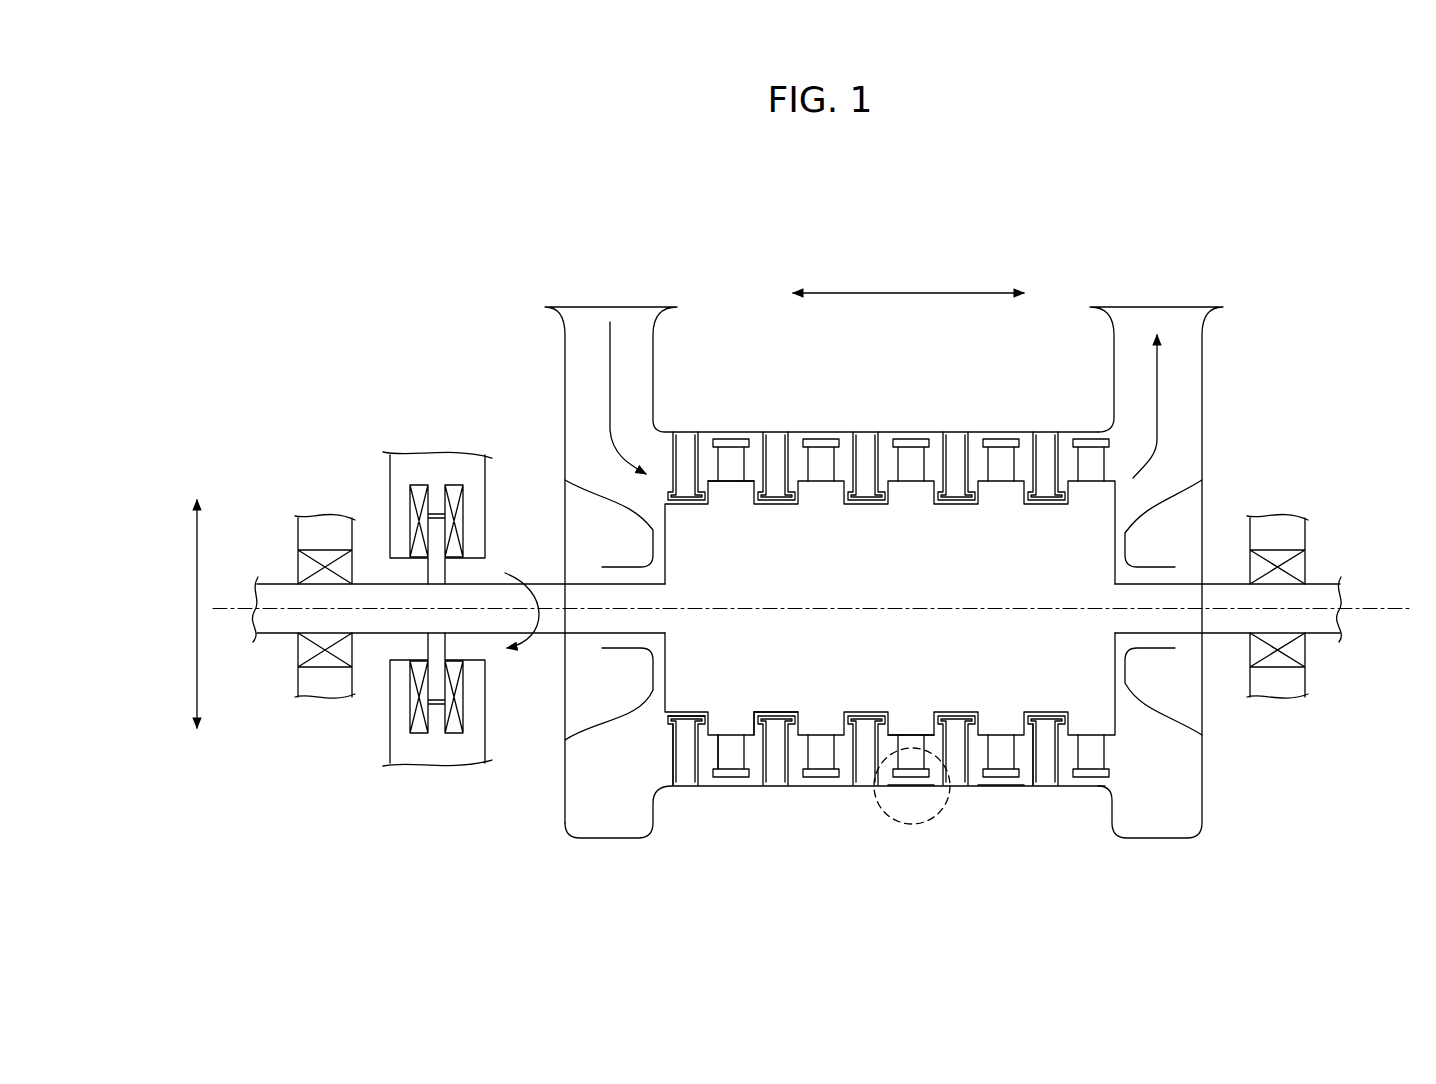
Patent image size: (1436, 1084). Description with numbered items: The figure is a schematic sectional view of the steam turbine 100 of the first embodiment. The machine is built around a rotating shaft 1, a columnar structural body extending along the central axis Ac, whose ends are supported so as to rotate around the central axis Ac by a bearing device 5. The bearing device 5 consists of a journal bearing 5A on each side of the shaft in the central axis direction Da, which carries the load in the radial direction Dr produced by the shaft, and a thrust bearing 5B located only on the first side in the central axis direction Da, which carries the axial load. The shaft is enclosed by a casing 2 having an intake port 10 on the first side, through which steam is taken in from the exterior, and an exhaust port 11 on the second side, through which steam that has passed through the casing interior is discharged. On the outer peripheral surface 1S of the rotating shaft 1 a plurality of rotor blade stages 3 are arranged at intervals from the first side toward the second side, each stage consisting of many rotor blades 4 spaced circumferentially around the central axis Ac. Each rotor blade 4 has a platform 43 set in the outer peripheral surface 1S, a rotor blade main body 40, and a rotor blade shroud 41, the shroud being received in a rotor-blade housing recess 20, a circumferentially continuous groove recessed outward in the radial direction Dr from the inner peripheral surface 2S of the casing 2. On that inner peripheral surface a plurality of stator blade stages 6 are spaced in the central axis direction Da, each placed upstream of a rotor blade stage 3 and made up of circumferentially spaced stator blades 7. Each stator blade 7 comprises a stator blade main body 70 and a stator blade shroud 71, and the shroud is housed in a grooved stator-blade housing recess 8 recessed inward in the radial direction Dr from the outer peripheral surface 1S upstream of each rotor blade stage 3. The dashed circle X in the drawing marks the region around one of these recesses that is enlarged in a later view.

The steam turbine 100 is at (1294, 230).
The rotating shaft 1 is at (693, 661).
The intake port 10 is at (660, 355).
The exhaust port 11 is at (1203, 355).
The stator blade stage 6 is at (866, 568).
The stator blade 7 is at (865, 452).
The rotor blade stage 3 is at (911, 565).
The rotor blade 4 is at (1090, 457).
The bearing device 5 is at (822, 559).
The journal bearing 5A is at (322, 490).
The thrust bearing 5B is at (430, 428).
The rotor blade main body 40 is at (733, 746).
The rotor blade shroud 41 is at (733, 748).
The platform 43 is at (912, 722).
The stator blade main body 70 is at (677, 758).
The stator blade shroud 71 is at (685, 728).
The outer peripheral surface 1S is at (752, 740).
The stator-blade housing recess 8 is at (867, 720).
The enlarged region X is at (882, 822).
The casing 2 is at (926, 787).
The rotor-blade housing recess 20 is at (998, 786).
The inner peripheral surface 2S is at (1033, 782).
The central axis direction Da is at (908, 275).
The radial direction Dr is at (178, 614).
The central axis Ac is at (1320, 610).